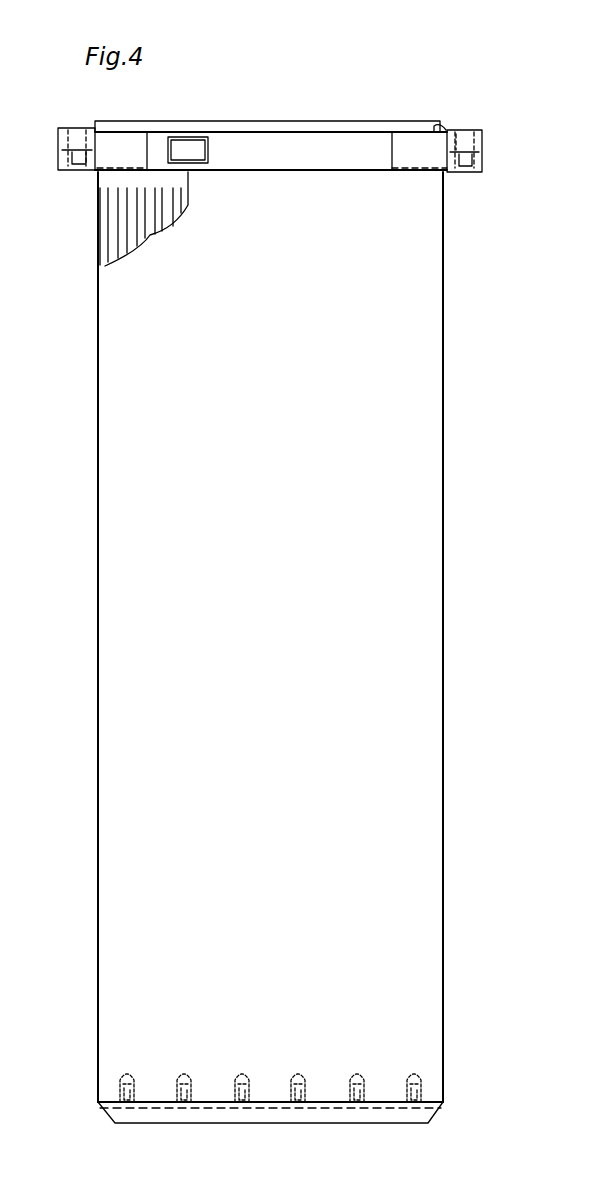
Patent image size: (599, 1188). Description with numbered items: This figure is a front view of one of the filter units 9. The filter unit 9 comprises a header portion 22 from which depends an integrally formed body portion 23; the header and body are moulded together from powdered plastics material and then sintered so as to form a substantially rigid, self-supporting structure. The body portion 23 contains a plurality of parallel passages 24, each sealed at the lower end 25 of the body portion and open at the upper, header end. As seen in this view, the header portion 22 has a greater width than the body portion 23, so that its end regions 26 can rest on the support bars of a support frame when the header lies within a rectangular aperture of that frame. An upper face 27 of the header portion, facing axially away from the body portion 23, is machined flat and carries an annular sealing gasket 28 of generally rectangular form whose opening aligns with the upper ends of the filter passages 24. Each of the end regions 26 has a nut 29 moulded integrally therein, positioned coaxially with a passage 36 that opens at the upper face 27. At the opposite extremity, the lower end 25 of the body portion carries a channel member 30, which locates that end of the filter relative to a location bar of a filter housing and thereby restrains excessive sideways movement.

The filter unit 9 is at (446, 732).
The header portion 22 is at (386, 125).
The body portion 23 is at (446, 424).
The parallel passages 24 is at (107, 243).
The lower end 25 is at (444, 1100).
The end regions 26 is at (470, 172).
The upper face 27 is at (439, 124).
The annular sealing gasket 28 is at (238, 125).
The nut 29 is at (67, 172).
The channel member 30 is at (403, 1116).
The passage 36 is at (465, 125).